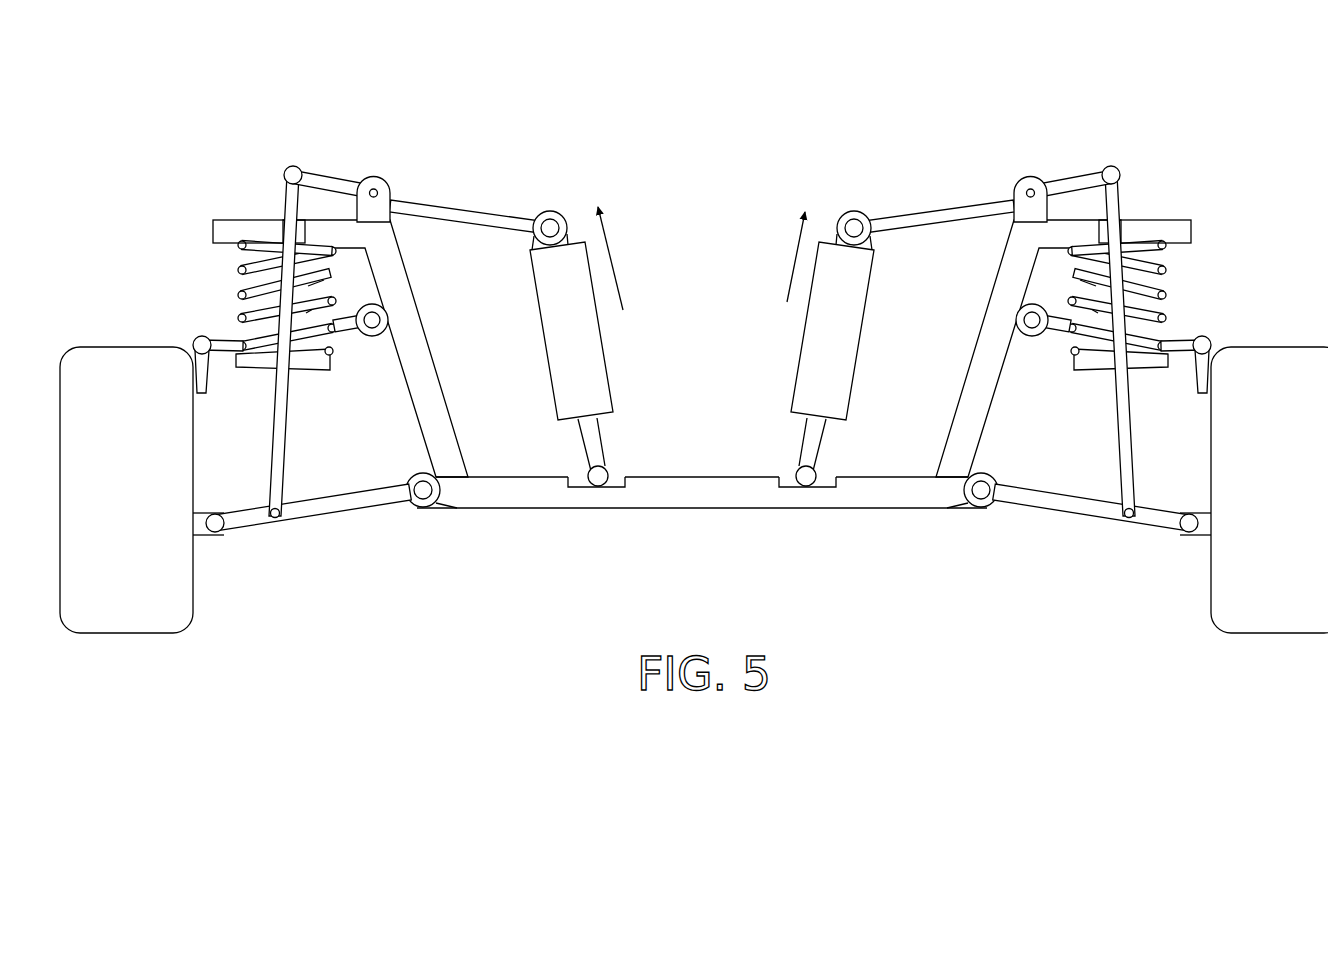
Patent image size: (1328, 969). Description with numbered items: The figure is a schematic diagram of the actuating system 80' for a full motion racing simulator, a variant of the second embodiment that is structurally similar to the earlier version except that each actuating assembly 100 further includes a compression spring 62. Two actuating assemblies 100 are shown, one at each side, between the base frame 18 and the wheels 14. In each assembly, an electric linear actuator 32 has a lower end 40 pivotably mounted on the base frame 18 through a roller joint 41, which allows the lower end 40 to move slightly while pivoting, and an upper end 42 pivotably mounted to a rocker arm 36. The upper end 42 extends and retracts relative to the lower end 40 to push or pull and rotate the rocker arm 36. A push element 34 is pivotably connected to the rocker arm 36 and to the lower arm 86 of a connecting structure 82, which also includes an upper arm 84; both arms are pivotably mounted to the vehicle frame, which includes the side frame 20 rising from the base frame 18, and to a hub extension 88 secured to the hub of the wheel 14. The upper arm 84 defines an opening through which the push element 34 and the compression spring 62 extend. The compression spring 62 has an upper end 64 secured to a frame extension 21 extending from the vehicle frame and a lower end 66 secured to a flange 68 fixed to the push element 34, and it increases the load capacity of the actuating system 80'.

The wheel 14 is at (138, 633).
The base frame 18 is at (713, 508).
The side frame 20 is at (418, 320).
The frame extension 21 is at (245, 220).
The actuator 32 is at (797, 358).
The push element 34 is at (288, 418).
The rocker arm 36 is at (453, 198).
The lower end 40 is at (798, 472).
The roller joint 41 is at (577, 508).
The upper end 42 is at (563, 220).
The compression spring 62 is at (220, 285).
The upper end 64 is at (238, 246).
The lower end 66 is at (230, 342).
The flange 68 is at (257, 368).
The actuating system 80' is at (686, 375).
The connecting structure 82 is at (300, 528).
The upper arm 84 is at (350, 332).
The lower arm 86 is at (355, 510).
The hub extension 88 is at (192, 348).
The actuating assembly 100 is at (365, 127).